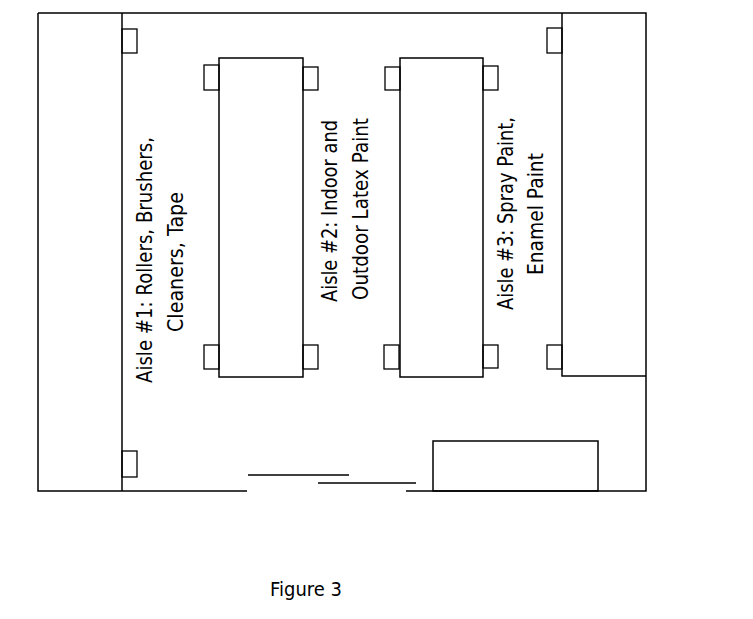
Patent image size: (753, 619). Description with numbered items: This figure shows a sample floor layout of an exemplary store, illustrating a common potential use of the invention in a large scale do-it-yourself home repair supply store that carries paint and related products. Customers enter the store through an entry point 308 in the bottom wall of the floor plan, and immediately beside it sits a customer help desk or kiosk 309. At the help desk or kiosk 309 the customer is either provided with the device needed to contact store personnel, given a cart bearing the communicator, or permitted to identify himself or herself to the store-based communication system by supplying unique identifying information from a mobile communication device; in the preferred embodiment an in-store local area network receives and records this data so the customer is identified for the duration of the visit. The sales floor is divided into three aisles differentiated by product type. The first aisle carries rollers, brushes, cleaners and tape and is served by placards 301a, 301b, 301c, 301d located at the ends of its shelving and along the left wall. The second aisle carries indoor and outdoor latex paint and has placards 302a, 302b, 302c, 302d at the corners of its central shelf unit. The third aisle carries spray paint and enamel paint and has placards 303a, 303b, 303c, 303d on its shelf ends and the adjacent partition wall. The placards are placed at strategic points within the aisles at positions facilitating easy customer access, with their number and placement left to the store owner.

The placard 301a is at (137, 466).
The placard 301b is at (137, 40).
The placard 301c is at (204, 72).
The placard 301d is at (212, 369).
The placard 302a is at (318, 353).
The placard 302b is at (318, 77).
The placard 302c is at (385, 78).
The placard 302d is at (384, 360).
The placard 303a is at (498, 350).
The placard 303b is at (498, 78).
The placard 303c is at (547, 42).
The placard 303d is at (547, 360).
The entry point 308 is at (376, 497).
The customer help desk or kiosk 309 is at (598, 456).